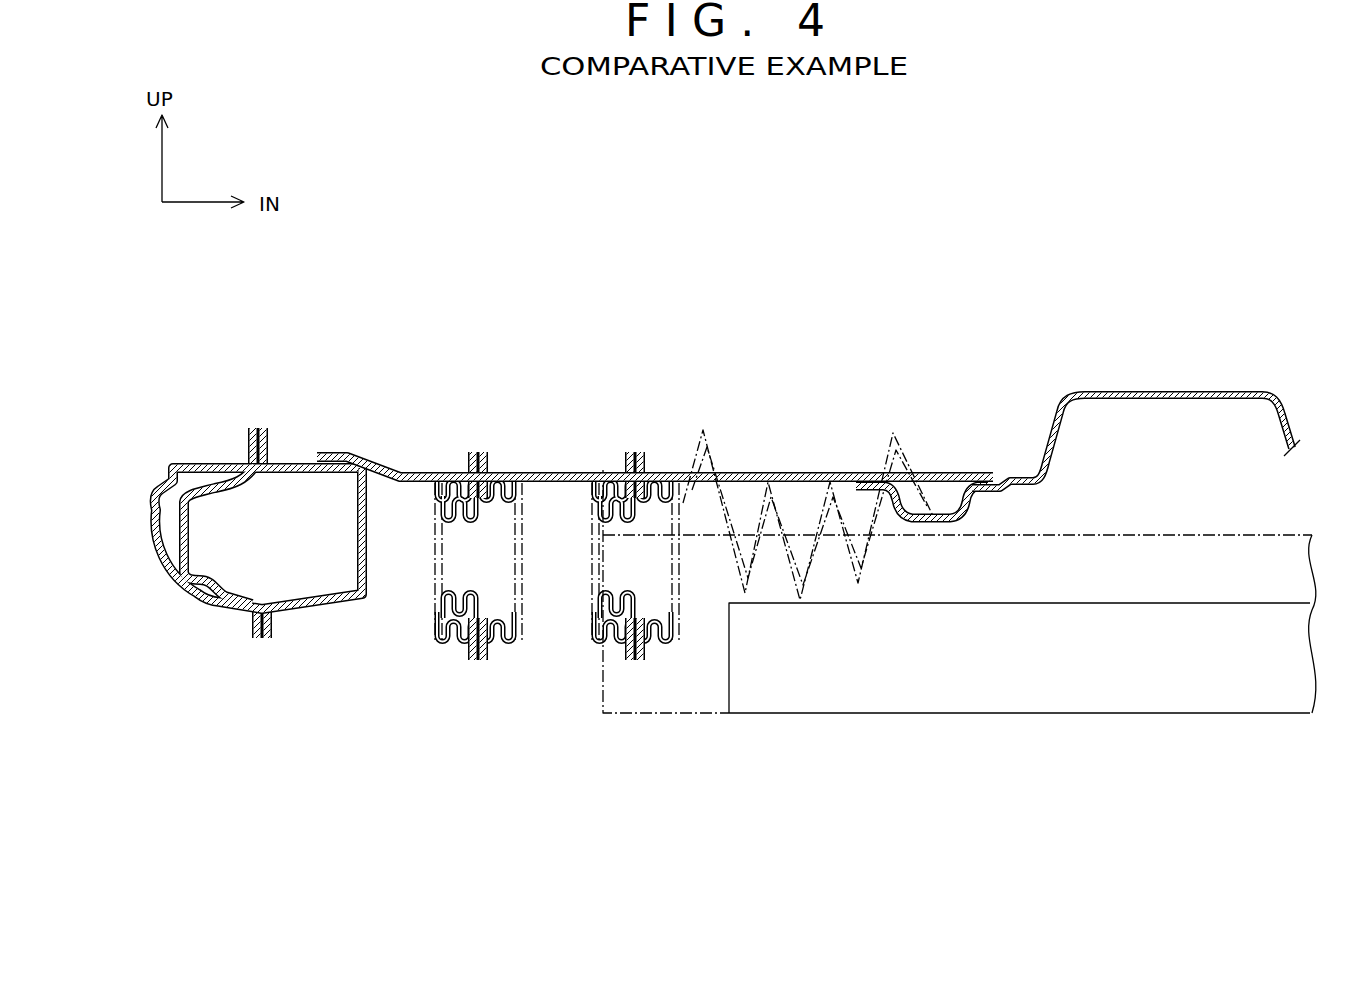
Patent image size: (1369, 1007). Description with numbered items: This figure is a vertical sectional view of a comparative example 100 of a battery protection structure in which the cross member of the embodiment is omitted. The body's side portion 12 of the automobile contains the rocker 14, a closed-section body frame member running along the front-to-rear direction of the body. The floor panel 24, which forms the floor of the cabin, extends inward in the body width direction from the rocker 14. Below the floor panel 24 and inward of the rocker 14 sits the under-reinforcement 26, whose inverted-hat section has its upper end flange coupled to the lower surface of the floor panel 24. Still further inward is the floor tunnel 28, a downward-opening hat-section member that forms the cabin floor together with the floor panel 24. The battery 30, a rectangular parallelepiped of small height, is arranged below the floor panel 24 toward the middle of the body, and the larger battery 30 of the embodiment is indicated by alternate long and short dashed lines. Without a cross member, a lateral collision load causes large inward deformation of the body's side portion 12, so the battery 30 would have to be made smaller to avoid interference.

The comparative example 100 is at (667, 312).
The body's side portion 12 is at (339, 666).
The rocker 14 is at (228, 450).
The floor panel 24 is at (551, 472).
The under-reinforcement 26 is at (916, 523).
The floor tunnel 28 is at (1178, 394).
The battery 30 is at (1120, 535).